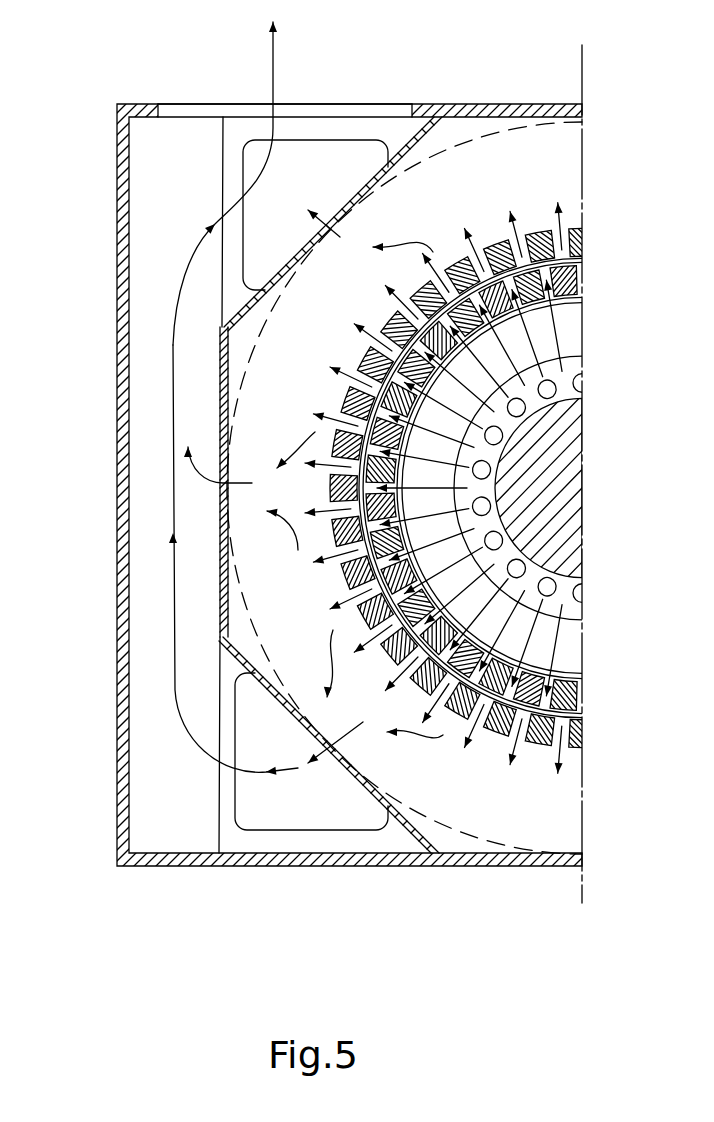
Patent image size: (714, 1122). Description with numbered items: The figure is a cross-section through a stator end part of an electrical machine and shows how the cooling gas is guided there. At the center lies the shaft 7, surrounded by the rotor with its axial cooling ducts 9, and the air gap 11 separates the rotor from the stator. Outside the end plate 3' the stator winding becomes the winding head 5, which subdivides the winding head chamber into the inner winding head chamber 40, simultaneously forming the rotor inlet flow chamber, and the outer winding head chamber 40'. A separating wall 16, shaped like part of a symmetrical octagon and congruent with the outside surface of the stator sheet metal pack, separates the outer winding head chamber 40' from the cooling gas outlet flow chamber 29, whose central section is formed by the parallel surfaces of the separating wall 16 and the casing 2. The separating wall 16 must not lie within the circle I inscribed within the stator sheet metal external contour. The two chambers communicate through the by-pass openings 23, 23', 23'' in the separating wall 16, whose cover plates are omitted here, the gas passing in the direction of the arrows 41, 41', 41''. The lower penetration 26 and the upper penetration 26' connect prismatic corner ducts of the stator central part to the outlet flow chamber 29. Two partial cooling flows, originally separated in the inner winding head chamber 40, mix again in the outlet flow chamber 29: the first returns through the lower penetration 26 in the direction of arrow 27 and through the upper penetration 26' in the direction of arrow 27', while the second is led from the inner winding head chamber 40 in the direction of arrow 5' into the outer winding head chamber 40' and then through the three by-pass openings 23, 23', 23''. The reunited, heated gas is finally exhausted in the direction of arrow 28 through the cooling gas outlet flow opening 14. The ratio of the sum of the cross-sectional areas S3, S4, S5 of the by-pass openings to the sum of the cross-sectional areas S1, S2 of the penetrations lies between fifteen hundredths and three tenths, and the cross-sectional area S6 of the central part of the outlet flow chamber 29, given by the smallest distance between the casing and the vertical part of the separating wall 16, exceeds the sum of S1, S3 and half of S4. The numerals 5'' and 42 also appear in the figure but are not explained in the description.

The casing 2 is at (123, 130).
The cooling gas outlet flow opening 14 is at (180, 110).
The arrow direction of exhaust flow 28 is at (249, 30).
The arrow direction through upper penetration 27' is at (322, 111).
The arrow direction through lower penetration 27 is at (279, 843).
The end plate 3' is at (294, 472).
The upper penetration 26' is at (329, 158).
The lower penetration 26 is at (311, 795).
The cross-sectional area of lower penetration S1 is at (255, 710).
The cross-sectional area of upper penetration S2 is at (252, 160).
The cross-sectional area of lower by-pass opening S3 is at (327, 738).
The cross-sectional area of central by-pass opening S4 is at (227, 477).
The cross-sectional area of upper by-pass opening S5 is at (320, 242).
The cross-sectional area of outlet flow chamber central part S6 is at (148, 561).
The upper by-pass opening 23'' is at (243, 224).
The central by-pass opening 23' is at (133, 520).
The lower by-pass opening 23 is at (329, 777).
The arrow direction through upper by-pass opening 41'' is at (375, 221).
The arrow direction through central by-pass opening 41' is at (116, 465).
The arrow direction through lower by-pass opening 41 is at (374, 746).
The air gap 11 is at (489, 487).
The arrow direction of second partial cooling flow 5' is at (518, 488).
The winding head 5 is at (477, 488).
The stator cooling ducts 5'' is at (435, 487).
The axial cooling ducts 9 is at (531, 488).
The shaft 7 is at (582, 441).
The inner winding head chamber 40 is at (471, 487).
The outer winding head chamber 40' is at (157, 625).
The separating wall 16 is at (220, 383).
The channel 42 is at (173, 423).
The cooling gas outlet flow chamber 29 is at (153, 598).
The inscribed circle I is at (453, 825).